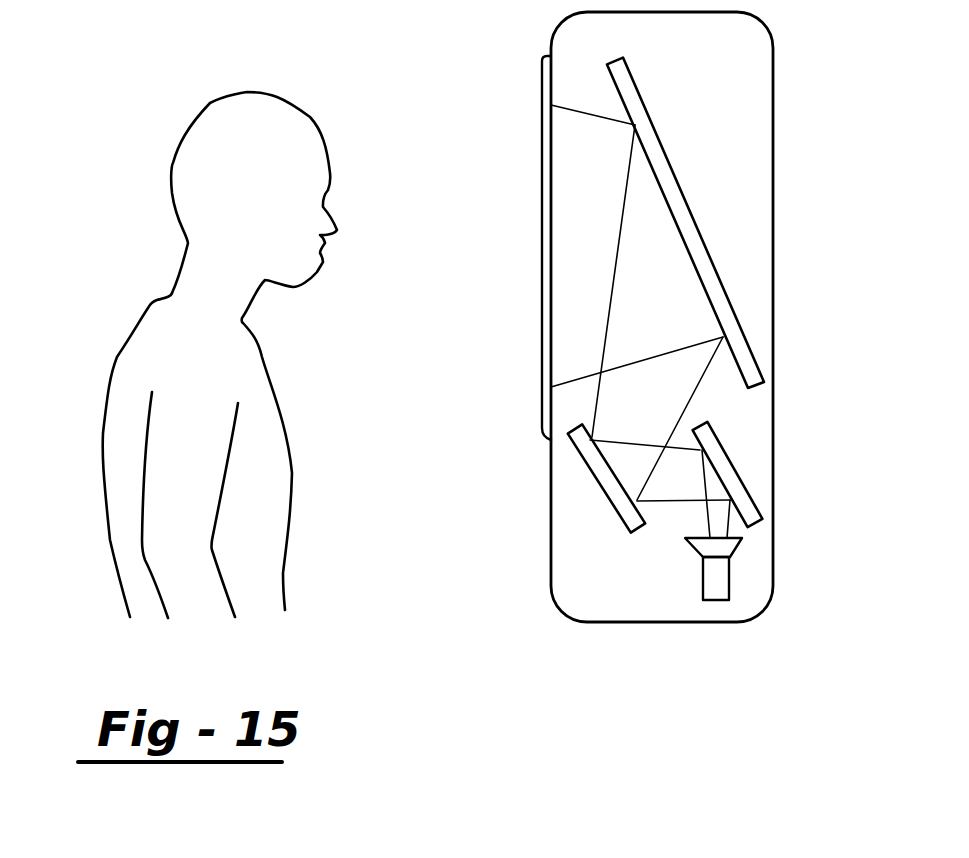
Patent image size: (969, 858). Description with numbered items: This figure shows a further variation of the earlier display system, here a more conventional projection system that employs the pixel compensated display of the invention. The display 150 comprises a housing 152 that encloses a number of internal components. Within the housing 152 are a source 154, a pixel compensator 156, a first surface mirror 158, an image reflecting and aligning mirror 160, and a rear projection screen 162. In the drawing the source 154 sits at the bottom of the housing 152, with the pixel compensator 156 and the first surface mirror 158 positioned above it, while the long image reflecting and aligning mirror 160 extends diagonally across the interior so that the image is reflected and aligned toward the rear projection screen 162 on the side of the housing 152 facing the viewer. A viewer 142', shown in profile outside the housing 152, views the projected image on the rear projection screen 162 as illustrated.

The viewer 142' is at (181, 355).
The display 150 is at (670, 317).
The housing 152 is at (773, 180).
The source 154 is at (720, 580).
The pixel compensator 156 is at (748, 507).
The first surface mirror 158 is at (578, 468).
The image reflecting and aligning mirror 160 is at (715, 285).
The rear projection screen 162 is at (543, 278).